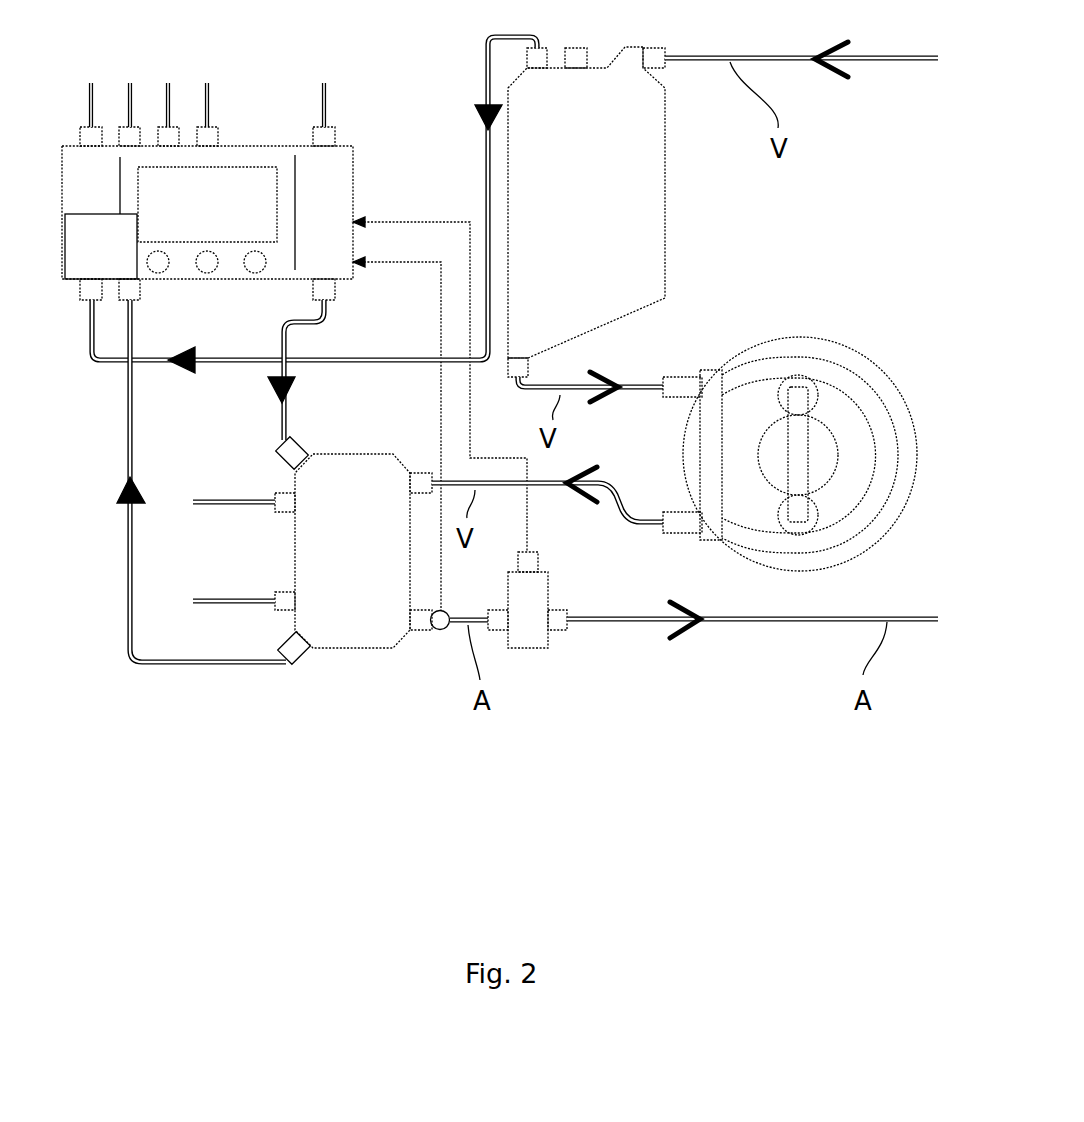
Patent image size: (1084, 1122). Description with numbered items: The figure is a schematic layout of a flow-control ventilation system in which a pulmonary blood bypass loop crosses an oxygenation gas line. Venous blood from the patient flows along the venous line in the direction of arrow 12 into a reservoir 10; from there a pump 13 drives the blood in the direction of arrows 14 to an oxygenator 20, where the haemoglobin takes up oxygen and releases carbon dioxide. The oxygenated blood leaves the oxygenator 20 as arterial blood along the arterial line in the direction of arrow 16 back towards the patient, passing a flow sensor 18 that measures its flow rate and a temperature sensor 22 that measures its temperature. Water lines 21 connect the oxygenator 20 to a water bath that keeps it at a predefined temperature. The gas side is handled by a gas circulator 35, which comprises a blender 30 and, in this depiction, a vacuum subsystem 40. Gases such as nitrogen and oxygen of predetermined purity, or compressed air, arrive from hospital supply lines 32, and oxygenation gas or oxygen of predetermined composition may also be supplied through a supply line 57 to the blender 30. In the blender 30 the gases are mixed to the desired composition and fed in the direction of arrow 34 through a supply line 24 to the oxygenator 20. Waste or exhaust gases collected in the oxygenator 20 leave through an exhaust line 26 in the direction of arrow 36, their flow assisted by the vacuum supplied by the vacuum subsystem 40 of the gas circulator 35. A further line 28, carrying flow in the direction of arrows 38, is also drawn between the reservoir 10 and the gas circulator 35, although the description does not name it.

The reservoir 10 is at (568, 202).
The arrow 12 is at (840, 68).
The pump 13 is at (852, 352).
The arrows 14 is at (617, 382).
The arrow 16 is at (690, 630).
The flow sensor 18 is at (540, 650).
The oxygenator 20 is at (338, 562).
The water lines 21 is at (195, 596).
The temperature sensor 22 is at (437, 632).
The supply line 24 is at (278, 421).
The exhaust line 26 is at (127, 577).
The line 28 is at (485, 157).
The blender 30 is at (192, 232).
The hospital supply lines 32 is at (91, 83).
The arrow 34 is at (290, 392).
The gas circulator 35 is at (61, 318).
The arrow 36 is at (122, 492).
The flow direction 38 is at (478, 112).
The vacuum subsystem 40 is at (85, 258).
The supply line 57 is at (324, 83).